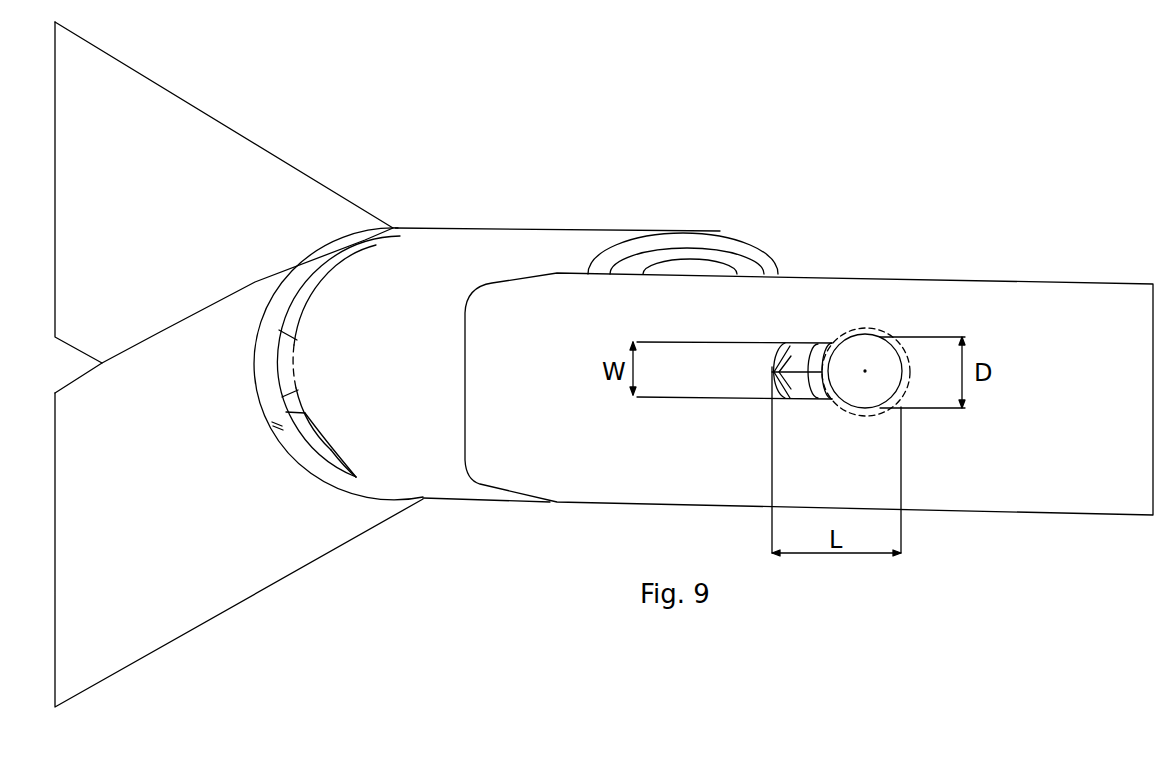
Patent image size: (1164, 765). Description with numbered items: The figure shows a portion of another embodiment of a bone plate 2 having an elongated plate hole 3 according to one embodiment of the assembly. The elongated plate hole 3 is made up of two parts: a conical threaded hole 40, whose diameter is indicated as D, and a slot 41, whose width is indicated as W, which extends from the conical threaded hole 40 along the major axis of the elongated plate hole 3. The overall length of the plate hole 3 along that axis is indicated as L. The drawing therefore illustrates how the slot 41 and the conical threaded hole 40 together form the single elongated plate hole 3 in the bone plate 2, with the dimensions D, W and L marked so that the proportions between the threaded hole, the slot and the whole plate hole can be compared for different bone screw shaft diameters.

The bone plate 2 is at (972, 487).
The plate hole 3 is at (852, 310).
The conical threaded hole 40 is at (872, 352).
The slot 41 is at (803, 343).